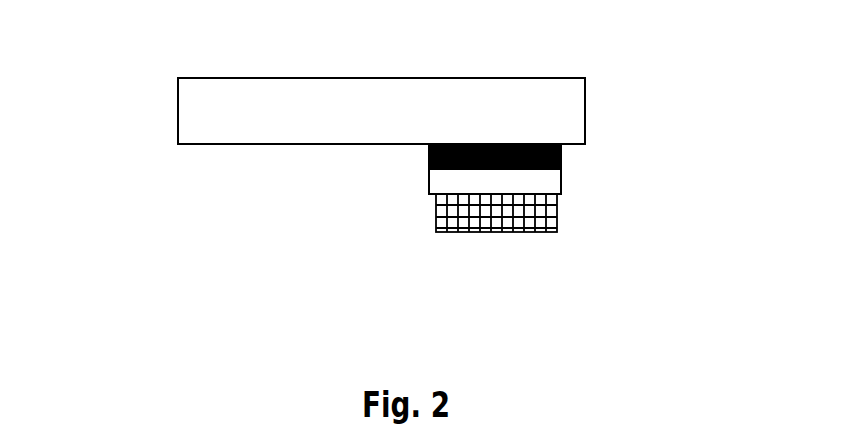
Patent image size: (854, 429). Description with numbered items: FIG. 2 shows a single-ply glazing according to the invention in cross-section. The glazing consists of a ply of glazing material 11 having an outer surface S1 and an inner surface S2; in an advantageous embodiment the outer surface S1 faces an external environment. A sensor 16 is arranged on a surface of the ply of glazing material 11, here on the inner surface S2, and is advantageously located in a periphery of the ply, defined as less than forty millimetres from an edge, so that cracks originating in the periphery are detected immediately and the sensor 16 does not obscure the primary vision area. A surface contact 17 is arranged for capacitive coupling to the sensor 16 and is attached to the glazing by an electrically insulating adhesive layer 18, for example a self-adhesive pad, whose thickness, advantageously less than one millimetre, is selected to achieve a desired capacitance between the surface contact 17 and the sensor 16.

The ply of glazing material 11 is at (599, 105).
The outer surface S1 is at (169, 69).
The inner surface S2 is at (169, 134).
The sensor 16 is at (576, 158).
The electrically insulating adhesive layer 18 is at (576, 185).
The surface contact 17 is at (571, 219).